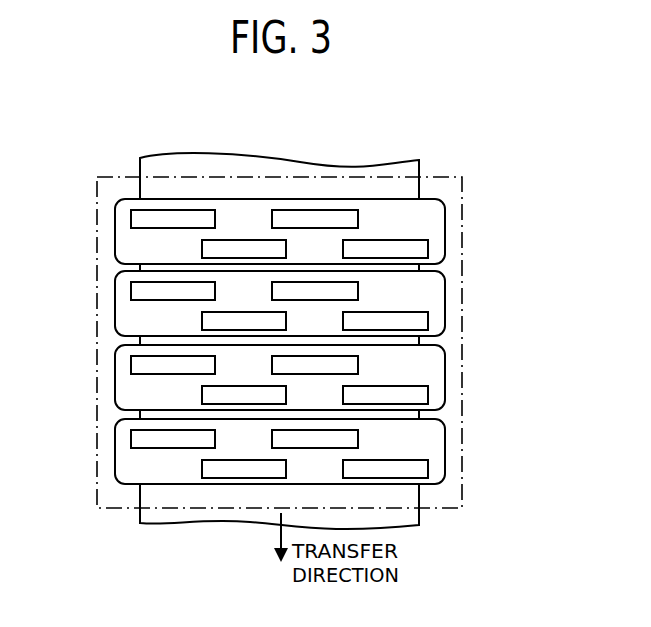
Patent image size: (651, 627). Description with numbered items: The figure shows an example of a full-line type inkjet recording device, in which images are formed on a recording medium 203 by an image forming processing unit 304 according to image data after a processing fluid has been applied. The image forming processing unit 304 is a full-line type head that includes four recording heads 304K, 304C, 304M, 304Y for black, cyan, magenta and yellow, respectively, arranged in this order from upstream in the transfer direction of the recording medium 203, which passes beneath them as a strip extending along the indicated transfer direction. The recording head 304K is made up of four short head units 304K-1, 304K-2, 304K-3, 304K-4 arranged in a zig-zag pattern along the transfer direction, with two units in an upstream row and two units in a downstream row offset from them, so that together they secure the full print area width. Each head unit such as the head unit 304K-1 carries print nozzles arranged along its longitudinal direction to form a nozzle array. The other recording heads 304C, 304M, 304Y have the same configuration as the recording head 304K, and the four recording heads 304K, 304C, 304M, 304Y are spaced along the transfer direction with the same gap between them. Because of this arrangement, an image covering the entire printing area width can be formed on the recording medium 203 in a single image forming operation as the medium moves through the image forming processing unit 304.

The recording medium 203 is at (138, 171).
The image forming processing unit 304 is at (463, 320).
The recording head (black) 304K is at (240, 183).
The recording head (cyan) 304C is at (125, 308).
The recording head (magenta) 304M is at (125, 381).
The recording head (yellow) 304Y is at (125, 455).
The head unit 304K-1 is at (170, 215).
The head unit 304K-2 is at (242, 247).
The head unit 304K-3 is at (317, 217).
The head unit 304K-4 is at (388, 247).